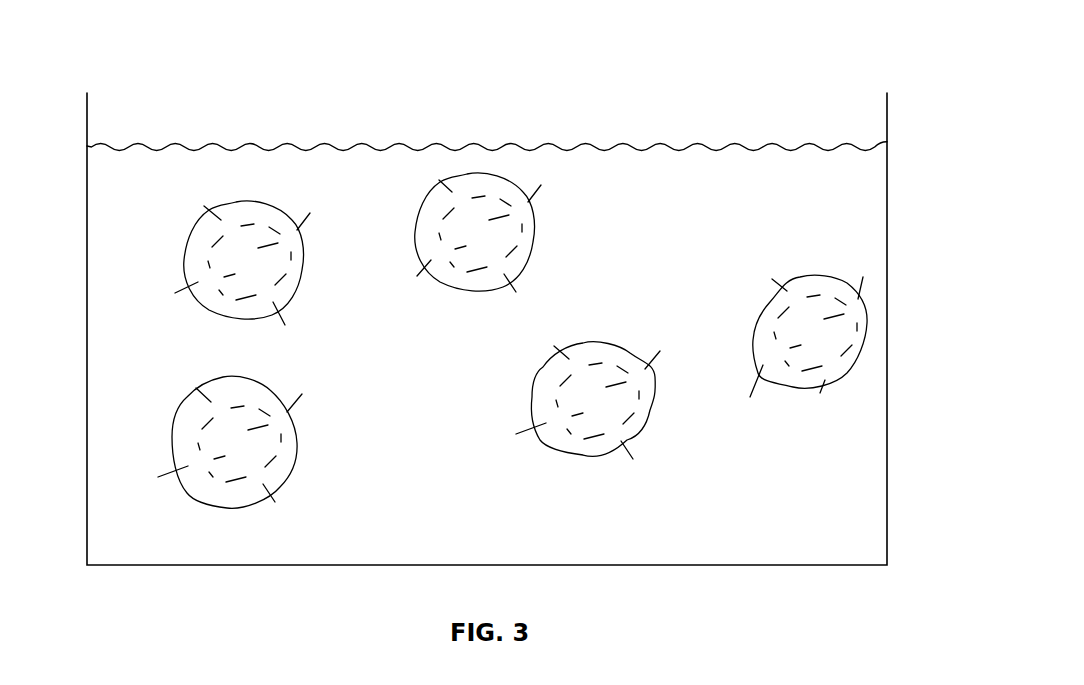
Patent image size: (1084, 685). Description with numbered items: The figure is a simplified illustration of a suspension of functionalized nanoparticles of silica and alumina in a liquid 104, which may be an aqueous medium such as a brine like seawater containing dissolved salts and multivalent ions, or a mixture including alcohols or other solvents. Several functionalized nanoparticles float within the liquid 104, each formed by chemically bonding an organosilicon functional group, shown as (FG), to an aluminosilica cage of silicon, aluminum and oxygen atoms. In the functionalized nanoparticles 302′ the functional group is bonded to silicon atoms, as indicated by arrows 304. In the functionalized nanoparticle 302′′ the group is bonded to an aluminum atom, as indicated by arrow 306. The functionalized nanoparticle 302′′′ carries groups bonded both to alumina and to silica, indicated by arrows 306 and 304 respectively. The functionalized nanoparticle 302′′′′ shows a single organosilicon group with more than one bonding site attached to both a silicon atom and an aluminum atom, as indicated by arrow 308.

The liquid 104 is at (843, 172).
The functionalized nanoparticle 302′ is at (489, 148).
The functionalized nanoparticle 302′′ is at (247, 179).
The functionalized nanoparticle 302′′′ is at (177, 551).
The functionalized nanoparticle 302′′′′ is at (806, 249).
The arrow indicating group bonded to silica 304 is at (662, 300).
The arrow indicating group bonded to alumina 306 is at (177, 226).
The arrow indicating multi-site bonded group 308 is at (780, 441).